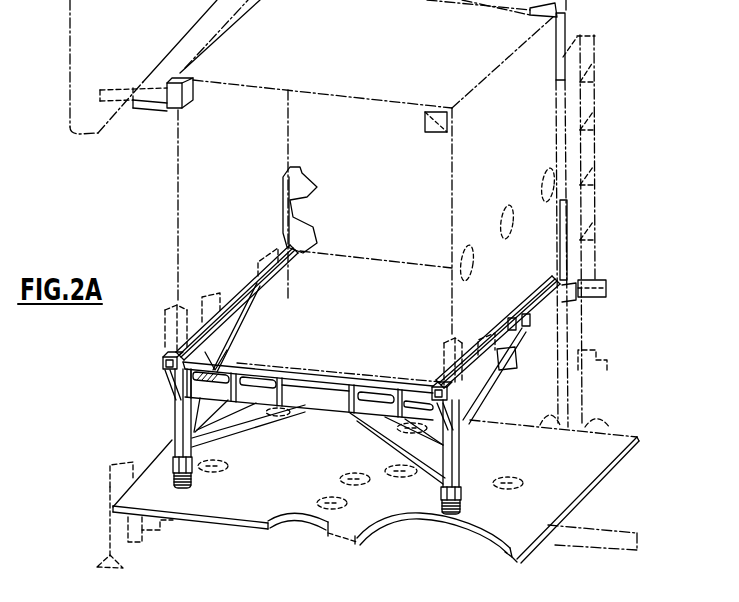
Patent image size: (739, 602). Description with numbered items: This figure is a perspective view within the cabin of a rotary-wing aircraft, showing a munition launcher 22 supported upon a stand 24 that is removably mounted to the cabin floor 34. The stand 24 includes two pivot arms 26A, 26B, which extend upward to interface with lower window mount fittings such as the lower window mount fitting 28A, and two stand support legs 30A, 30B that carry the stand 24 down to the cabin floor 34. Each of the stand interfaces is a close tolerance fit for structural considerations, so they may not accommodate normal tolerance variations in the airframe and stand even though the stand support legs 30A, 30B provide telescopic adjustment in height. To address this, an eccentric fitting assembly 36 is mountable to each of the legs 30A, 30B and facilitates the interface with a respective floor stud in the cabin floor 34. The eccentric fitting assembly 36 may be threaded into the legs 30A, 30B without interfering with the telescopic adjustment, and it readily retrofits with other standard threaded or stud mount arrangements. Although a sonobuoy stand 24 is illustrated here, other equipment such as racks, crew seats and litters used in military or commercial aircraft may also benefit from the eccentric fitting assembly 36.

The launcher 22 is at (530, 118).
The stand 24 is at (318, 404).
The pivot arm 26A is at (540, 312).
The pivot arm 26B is at (262, 292).
The lower window mount fitting 28A is at (562, 292).
The stand support leg 30A is at (458, 446).
The stand support leg 30B is at (175, 428).
The cabin floor 34 is at (265, 491).
The eccentric fitting assembly 36 is at (182, 488).